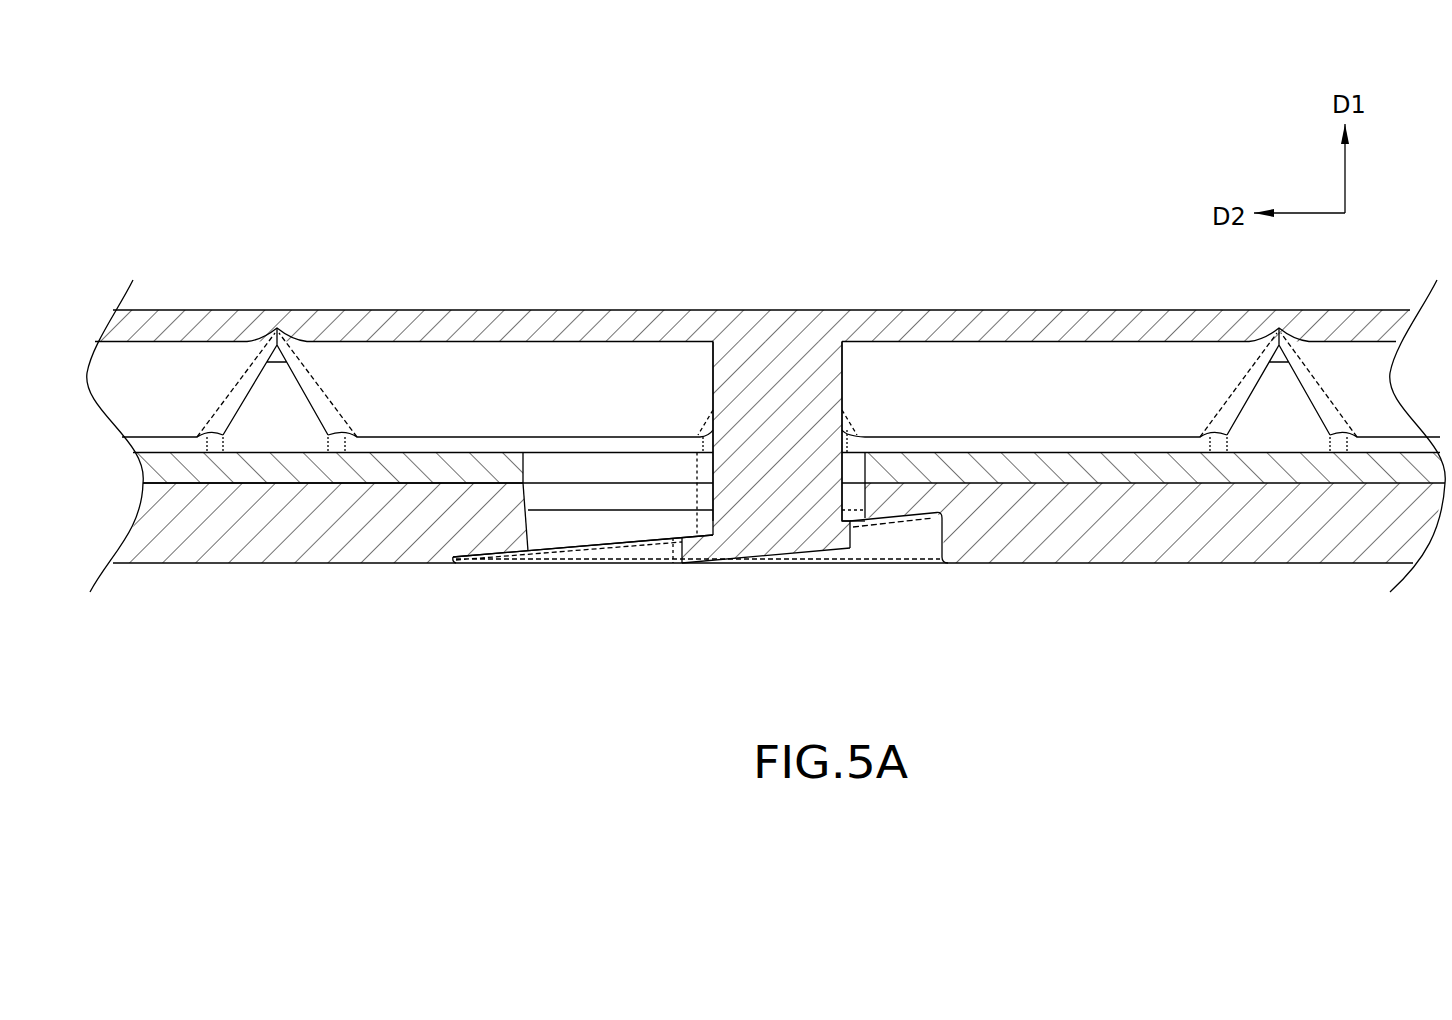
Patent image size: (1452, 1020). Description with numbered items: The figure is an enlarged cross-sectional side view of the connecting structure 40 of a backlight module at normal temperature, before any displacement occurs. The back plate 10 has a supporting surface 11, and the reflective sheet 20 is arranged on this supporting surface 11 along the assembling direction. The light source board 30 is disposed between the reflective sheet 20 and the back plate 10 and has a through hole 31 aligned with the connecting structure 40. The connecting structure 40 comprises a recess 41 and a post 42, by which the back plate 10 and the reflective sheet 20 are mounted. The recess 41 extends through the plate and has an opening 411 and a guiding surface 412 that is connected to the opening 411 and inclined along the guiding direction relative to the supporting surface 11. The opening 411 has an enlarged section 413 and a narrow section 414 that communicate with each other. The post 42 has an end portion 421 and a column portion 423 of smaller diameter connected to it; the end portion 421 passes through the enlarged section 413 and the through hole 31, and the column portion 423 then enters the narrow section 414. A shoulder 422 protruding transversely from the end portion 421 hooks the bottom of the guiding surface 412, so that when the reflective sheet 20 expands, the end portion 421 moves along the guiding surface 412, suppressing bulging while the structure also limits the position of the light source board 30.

The back plate 10 is at (307, 570).
The supporting surface 11 is at (212, 479).
The reflective sheet 20 is at (1047, 310).
The light source board 30 is at (1008, 452).
The through hole 31 is at (524, 462).
The connecting structure 40 is at (867, 572).
The recess 41 is at (498, 565).
The opening 411 is at (531, 500).
The guiding surface 412 is at (615, 543).
The enlarged section 413 is at (853, 493).
The narrow section 414 is at (585, 497).
The post 42 is at (707, 370).
The end portion 421 is at (778, 557).
The shoulder 422 is at (695, 555).
The column portion 423 is at (793, 380).